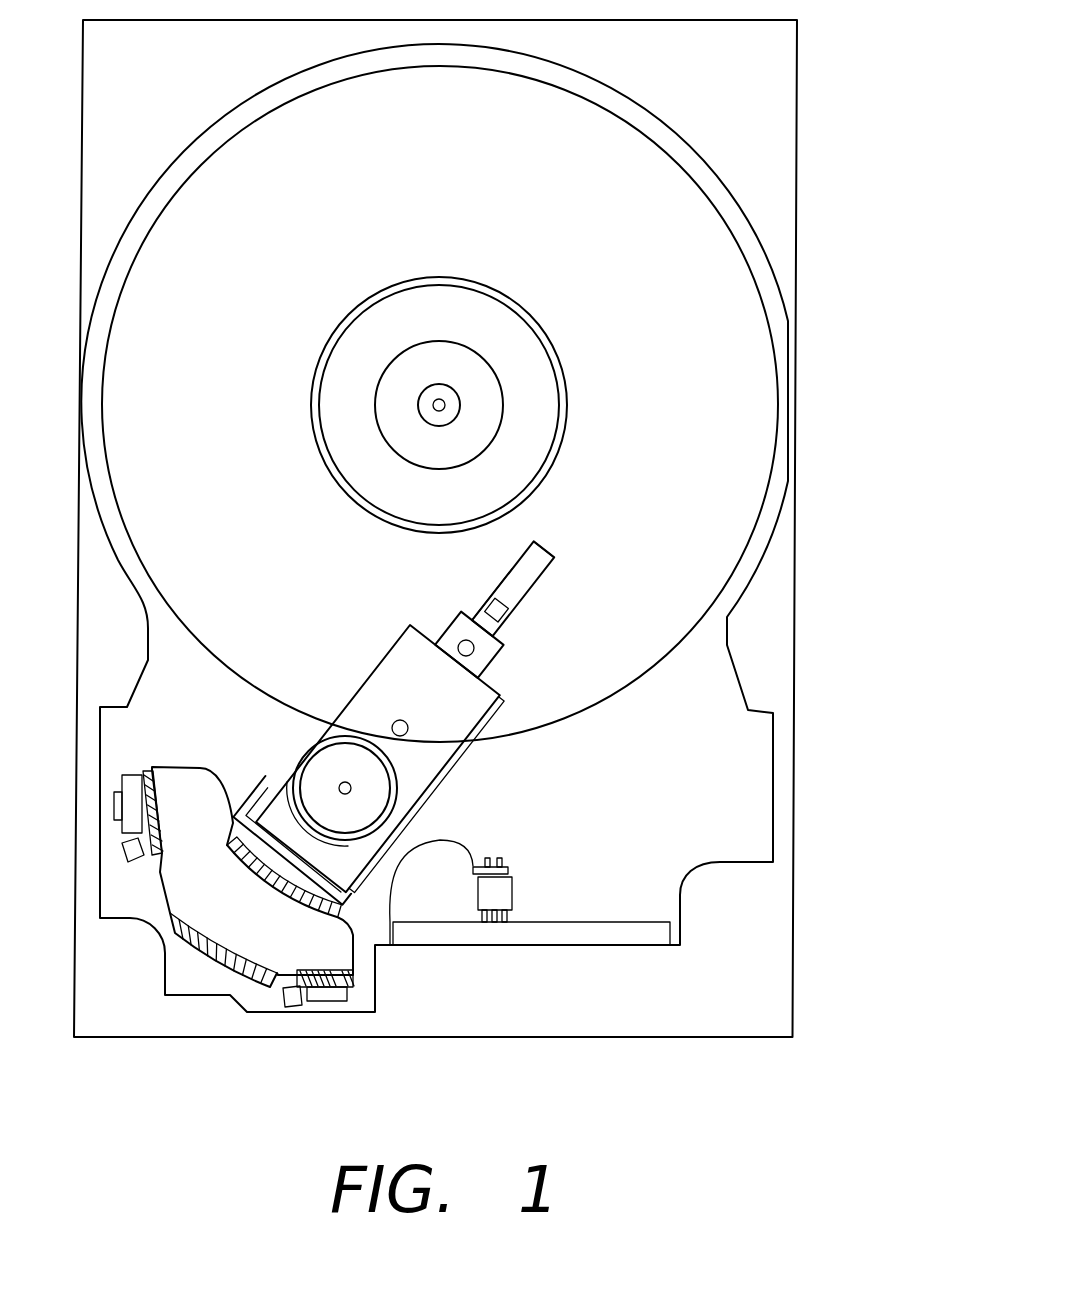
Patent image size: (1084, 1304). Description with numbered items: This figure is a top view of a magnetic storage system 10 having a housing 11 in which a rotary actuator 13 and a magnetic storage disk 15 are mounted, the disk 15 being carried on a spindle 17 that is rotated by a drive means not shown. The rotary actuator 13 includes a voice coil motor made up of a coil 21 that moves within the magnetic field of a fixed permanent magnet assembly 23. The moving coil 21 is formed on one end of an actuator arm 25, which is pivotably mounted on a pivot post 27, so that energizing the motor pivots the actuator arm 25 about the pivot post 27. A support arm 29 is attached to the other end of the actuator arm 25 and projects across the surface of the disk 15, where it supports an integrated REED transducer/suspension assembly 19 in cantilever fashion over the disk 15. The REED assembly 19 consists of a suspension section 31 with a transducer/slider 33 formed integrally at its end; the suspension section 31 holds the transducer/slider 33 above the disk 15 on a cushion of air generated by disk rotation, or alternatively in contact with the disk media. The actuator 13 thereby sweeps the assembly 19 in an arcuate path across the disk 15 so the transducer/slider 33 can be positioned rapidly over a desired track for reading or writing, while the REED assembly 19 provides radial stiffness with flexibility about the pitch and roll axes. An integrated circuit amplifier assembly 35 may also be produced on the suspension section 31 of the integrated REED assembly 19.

The magnetic storage system 10 is at (826, 294).
The housing 11 is at (782, 802).
The rotary actuator 13 is at (235, 781).
The magnetic storage disk 15 is at (694, 501).
The spindle 17 is at (458, 358).
The integrated REED transducer/suspension assembly 19 is at (548, 574).
The coil 21 is at (213, 993).
The permanent magnet assembly 23 is at (222, 930).
The actuator arm 25 is at (443, 752).
The pivot post 27 is at (345, 788).
The support arm 29 is at (450, 631).
The suspension section 31 is at (503, 586).
The transducer/slider 33 is at (534, 542).
The integrated circuit amplifier assembly 35 is at (508, 615).